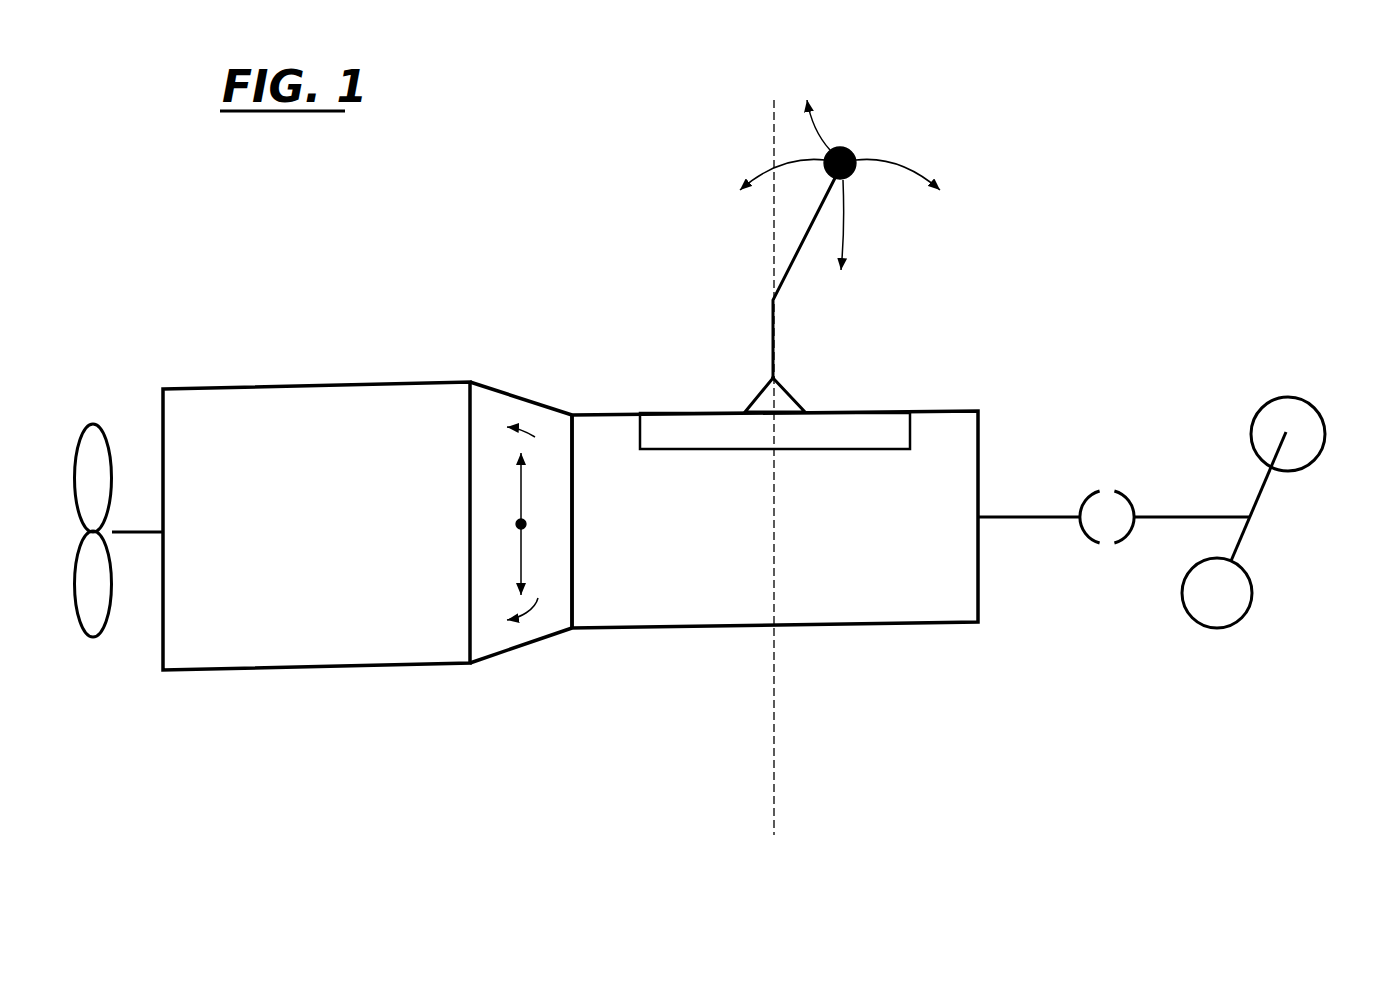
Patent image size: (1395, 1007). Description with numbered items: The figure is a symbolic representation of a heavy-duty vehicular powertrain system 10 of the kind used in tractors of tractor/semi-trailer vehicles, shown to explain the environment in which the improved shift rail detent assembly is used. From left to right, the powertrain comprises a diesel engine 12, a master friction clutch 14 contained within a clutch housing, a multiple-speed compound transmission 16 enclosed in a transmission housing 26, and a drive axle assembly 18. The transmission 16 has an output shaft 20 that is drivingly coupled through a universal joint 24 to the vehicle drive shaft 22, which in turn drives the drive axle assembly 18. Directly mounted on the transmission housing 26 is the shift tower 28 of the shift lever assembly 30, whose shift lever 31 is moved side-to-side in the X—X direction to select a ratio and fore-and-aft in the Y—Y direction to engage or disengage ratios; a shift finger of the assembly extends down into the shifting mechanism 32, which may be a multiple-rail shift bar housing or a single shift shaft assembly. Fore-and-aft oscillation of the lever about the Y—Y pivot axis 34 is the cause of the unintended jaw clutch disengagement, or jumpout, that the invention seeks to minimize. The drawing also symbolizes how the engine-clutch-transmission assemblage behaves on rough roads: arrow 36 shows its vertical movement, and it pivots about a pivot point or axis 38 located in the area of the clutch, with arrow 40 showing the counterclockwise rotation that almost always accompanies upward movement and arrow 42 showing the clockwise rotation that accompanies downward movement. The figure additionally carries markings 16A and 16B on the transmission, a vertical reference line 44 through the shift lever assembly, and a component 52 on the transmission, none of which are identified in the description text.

The vehicular powertrain system 10 is at (1167, 198).
The diesel engine 12 is at (335, 632).
The master friction clutch 14 is at (518, 397).
The multiple-speed compound transmission 16 is at (843, 590).
The first body portion 16A is at (700, 577).
The second body portion 16B is at (920, 503).
The drive axle assembly 18 is at (1290, 582).
The output shaft 20 is at (1047, 517).
The vehicle drive shaft 22 is at (1219, 513).
The universal joint 24 is at (1106, 560).
The transmission housing 26 is at (943, 410).
The shift tower 28 is at (777, 400).
The shift lever assembly 30 is at (876, 303).
The shift lever 31 is at (795, 253).
The shifting mechanism 32 is at (876, 430).
The Y—Y pivot axis 34 is at (773, 378).
The arrow 36 is at (518, 568).
The pivot point or axis 38 is at (521, 524).
The arrow 40 is at (535, 437).
The arrow 42 is at (538, 598).
The vertical axis 44 is at (775, 732).
The control unit 52 is at (770, 413).